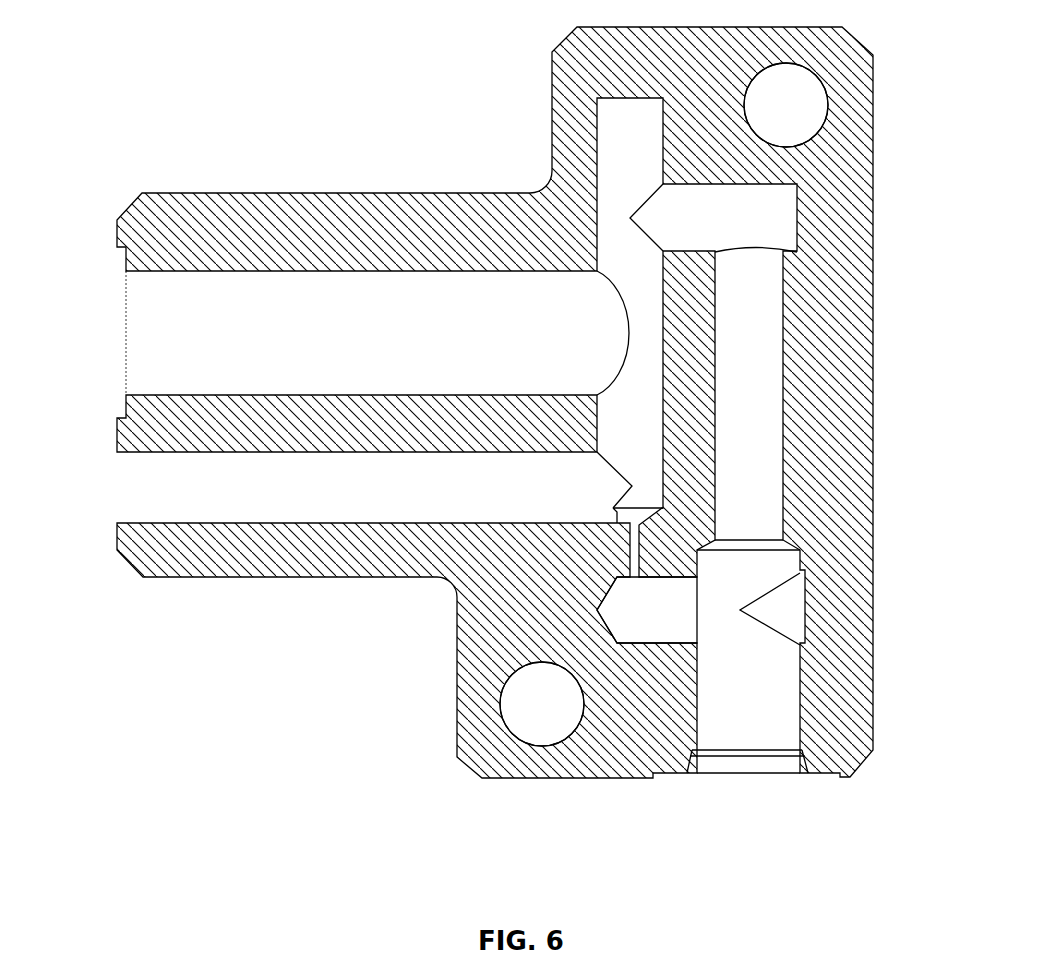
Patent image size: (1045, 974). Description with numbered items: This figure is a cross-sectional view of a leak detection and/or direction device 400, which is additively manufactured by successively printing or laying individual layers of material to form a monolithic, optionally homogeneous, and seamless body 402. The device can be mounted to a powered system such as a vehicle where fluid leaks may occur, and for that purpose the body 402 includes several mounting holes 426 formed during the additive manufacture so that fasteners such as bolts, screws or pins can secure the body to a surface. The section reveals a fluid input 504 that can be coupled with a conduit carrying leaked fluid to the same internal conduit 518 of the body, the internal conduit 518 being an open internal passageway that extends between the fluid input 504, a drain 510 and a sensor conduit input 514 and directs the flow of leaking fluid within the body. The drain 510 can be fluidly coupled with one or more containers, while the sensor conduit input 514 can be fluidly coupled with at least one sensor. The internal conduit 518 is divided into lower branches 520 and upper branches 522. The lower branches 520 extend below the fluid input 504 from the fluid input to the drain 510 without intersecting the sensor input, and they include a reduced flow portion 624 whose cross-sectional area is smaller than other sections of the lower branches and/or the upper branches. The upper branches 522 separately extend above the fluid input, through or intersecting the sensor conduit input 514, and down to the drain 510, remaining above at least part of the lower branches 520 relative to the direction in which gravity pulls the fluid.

The leak detection and/or direction device 400 is at (290, 56).
The additively manufactured body 402 is at (830, 355).
The mounting holes 426 is at (811, 119).
The fluid input 504 is at (118, 483).
The drain 510 is at (737, 777).
The sensor conduit input 514 is at (118, 332).
The internal conduit 518 is at (772, 430).
The lower branches 520 is at (635, 553).
The upper branches 522 is at (747, 350).
The reduced flow portion 624 is at (617, 552).